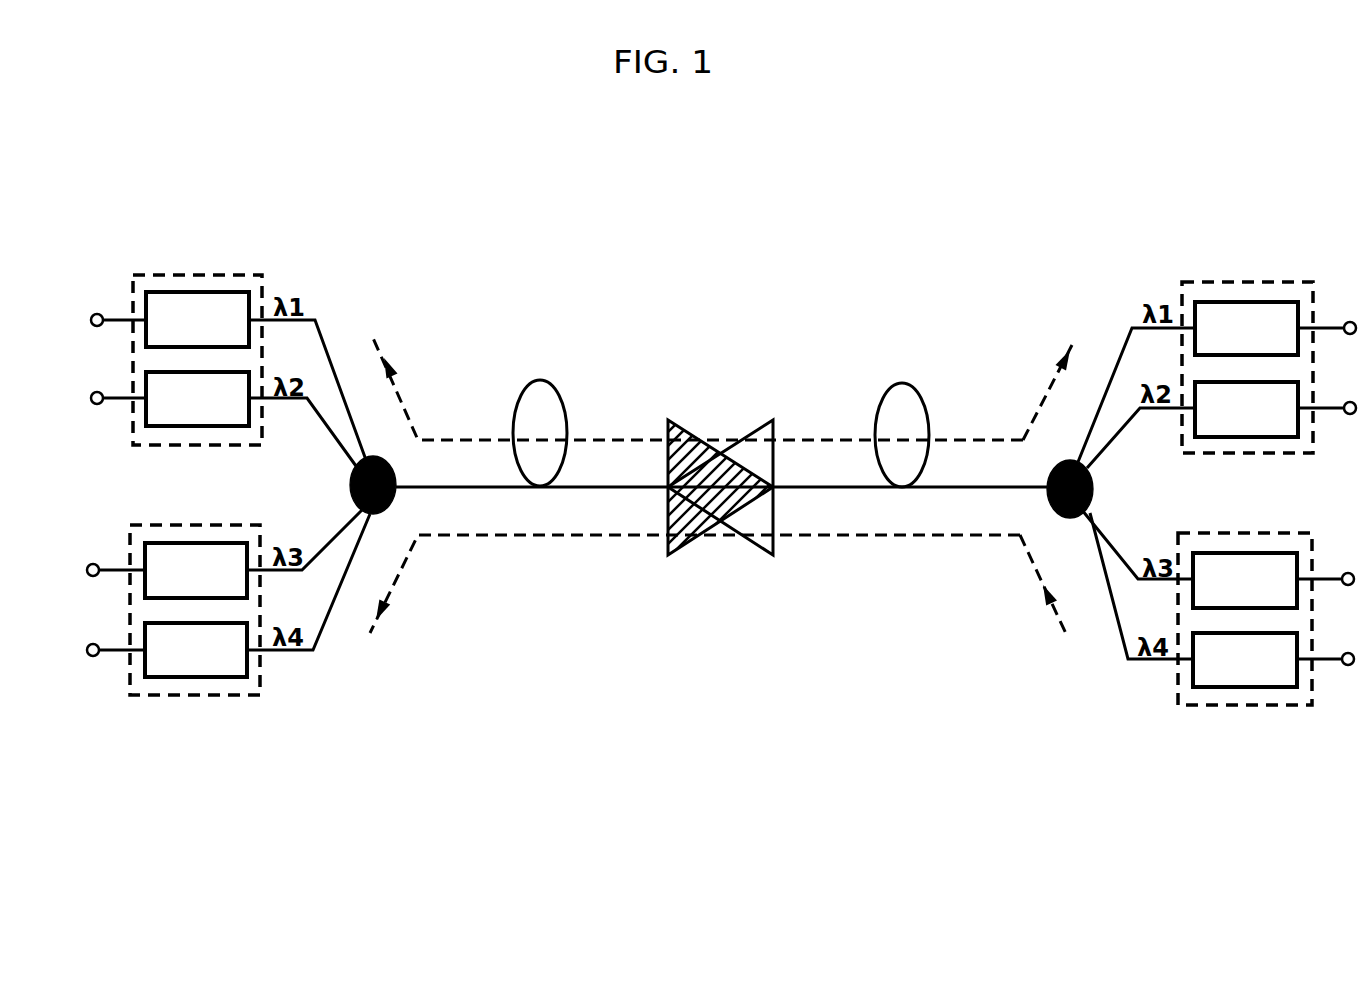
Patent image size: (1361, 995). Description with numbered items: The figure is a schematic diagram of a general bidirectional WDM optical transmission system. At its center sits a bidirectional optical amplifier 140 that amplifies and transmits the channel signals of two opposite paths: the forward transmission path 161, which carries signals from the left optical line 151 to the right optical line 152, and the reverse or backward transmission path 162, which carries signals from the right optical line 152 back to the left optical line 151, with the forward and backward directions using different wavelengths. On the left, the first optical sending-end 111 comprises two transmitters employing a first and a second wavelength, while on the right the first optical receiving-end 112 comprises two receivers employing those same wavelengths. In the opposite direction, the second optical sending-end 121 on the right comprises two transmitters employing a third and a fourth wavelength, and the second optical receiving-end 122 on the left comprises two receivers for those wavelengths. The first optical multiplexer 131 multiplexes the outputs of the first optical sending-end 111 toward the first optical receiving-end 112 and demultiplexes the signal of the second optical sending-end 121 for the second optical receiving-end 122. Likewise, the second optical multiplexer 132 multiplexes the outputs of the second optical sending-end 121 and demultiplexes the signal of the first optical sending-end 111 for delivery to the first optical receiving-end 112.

The first optical sending-end 111 is at (190, 274).
The first optical receiving-end 112 is at (1243, 282).
The second optical sending-end 121 is at (1232, 706).
The second optical receiving-end 122 is at (185, 696).
The first optical multiplexer 131 is at (372, 514).
The second optical multiplexer 132 is at (1040, 543).
The bidirectional optical amplifier 140 is at (719, 454).
The left optical line 151 is at (540, 380).
The right optical line 152 is at (902, 383).
The forward transmission path 161 is at (472, 438).
The reverse or backward transmission path 162 is at (505, 535).